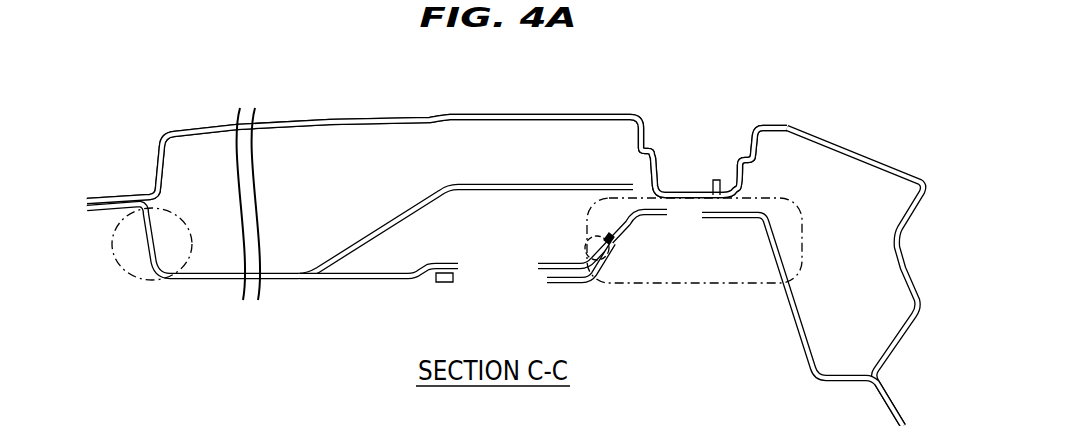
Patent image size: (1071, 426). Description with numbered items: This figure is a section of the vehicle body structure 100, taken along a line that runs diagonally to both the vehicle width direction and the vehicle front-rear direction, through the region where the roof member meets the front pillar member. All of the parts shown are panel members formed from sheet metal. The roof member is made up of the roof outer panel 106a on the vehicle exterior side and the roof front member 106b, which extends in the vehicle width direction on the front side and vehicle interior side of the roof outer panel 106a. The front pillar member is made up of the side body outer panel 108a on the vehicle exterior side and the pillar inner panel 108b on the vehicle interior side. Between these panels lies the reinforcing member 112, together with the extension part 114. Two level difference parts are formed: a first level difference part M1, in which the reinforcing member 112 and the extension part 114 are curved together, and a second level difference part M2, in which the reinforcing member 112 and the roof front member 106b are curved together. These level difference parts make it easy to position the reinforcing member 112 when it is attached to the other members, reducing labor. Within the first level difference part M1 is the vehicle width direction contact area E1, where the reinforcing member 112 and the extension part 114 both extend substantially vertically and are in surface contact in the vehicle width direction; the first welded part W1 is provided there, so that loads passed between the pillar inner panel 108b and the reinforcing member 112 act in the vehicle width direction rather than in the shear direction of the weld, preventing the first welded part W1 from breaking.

The vehicle body structure 100 is at (310, 98).
The roof outer panel 106a is at (440, 110).
The roof front member 106b is at (458, 183).
The side body outer panel 108a is at (843, 143).
The pillar inner panel 108b is at (793, 343).
The reinforcing member 112 is at (363, 280).
The extension part 114 is at (660, 217).
The first welded part W1 is at (587, 235).
The vehicle width direction contact area E1 is at (627, 242).
The first level difference part M1 is at (692, 286).
The second level difference part M2 is at (113, 250).